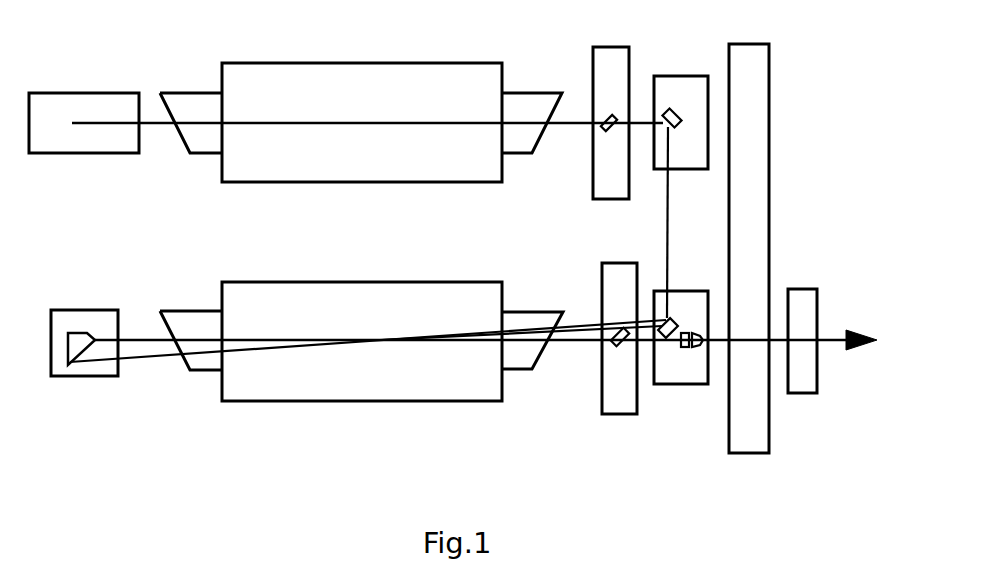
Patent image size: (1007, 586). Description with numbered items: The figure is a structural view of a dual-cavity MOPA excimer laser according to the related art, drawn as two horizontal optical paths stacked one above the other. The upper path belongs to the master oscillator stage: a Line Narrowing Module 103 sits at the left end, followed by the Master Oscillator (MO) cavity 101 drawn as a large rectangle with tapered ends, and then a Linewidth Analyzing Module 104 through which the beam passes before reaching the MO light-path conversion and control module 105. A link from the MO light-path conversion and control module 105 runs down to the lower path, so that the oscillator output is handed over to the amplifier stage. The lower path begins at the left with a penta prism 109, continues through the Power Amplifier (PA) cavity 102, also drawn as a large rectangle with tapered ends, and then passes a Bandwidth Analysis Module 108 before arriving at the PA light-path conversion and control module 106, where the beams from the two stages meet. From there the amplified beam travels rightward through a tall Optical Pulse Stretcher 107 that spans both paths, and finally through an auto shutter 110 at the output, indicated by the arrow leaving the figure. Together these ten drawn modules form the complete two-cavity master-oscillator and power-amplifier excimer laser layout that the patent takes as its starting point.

The Master Oscillator (MO) cavity 101 is at (361, 122).
The Power Amplifier (PA) cavity 102 is at (361, 341).
The Line Narrowing Module (LNM) 103 is at (127, 153).
The Linewidth Analyzing Module (LAM) 104 is at (593, 62).
The MO light-path conversion and control module (MO WEB) 105 is at (685, 76).
The PA light-path conversion and control module (PA WEB) 106 is at (693, 384).
The Optical Pulse Stretcher (OPS) 107 is at (769, 106).
The Bandwidth Analysis Module (BAM) 108 is at (602, 280).
The penta prism 109 is at (88, 310).
The auto shutter 110 is at (817, 325).